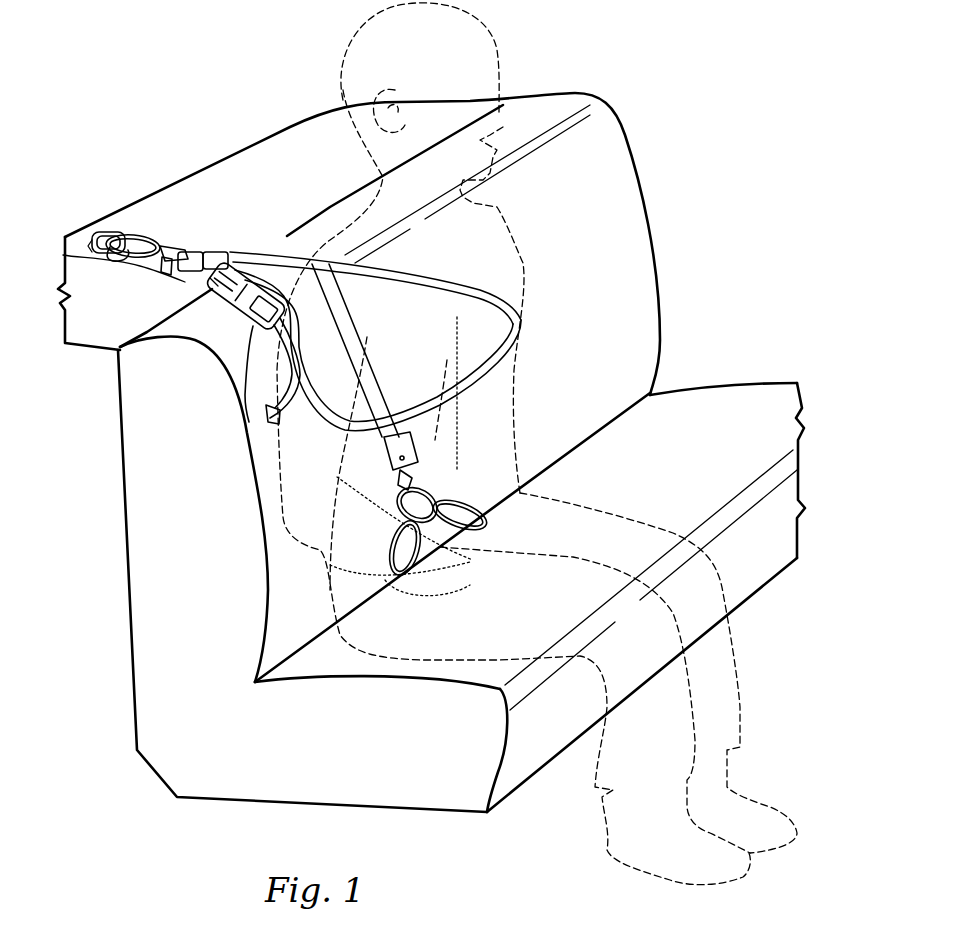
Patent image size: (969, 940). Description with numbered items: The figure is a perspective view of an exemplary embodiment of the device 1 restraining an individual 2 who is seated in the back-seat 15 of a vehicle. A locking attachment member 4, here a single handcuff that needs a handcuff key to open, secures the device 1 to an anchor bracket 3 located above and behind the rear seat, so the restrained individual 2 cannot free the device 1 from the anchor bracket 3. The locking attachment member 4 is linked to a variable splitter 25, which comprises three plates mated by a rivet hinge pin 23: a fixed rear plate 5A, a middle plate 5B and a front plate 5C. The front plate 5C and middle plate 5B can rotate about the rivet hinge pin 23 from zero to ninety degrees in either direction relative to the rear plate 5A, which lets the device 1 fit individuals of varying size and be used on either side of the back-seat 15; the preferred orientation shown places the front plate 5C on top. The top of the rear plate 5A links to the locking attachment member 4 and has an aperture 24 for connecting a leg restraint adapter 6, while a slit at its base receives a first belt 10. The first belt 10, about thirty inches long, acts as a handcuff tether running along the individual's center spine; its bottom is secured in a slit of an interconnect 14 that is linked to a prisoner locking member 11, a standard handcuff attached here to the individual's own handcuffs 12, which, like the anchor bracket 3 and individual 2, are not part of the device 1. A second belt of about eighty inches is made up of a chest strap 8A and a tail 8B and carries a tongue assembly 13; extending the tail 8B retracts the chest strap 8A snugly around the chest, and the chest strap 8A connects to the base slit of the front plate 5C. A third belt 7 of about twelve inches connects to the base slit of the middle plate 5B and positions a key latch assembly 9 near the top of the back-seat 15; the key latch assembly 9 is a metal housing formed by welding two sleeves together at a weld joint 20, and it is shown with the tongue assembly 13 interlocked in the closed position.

The device 1 is at (289, 252).
The individual 2 is at (493, 45).
The anchor bracket 3 is at (103, 228).
The locking attachment member 4 is at (147, 232).
The rear plate 5A is at (91, 240).
The middle plate 5B is at (222, 251).
The front plate 5C is at (192, 262).
The leg restraint adapter 6 is at (138, 283).
The third belt 7 is at (215, 290).
The chest strap 8A is at (482, 287).
The tail 8B is at (269, 424).
The key latch assembly 9 is at (237, 318).
The first belt 10 is at (377, 387).
The prisoner locking member 11 is at (450, 512).
The handcuffs 12 is at (490, 527).
The tongue assembly 13 is at (262, 410).
The interconnect 14 is at (397, 470).
The back-seat 15 is at (615, 177).
The weld joint 20 is at (217, 288).
The rivet hinge pin 23 is at (188, 250).
The aperture 24 is at (207, 282).
The variable splitter 25 is at (173, 243).